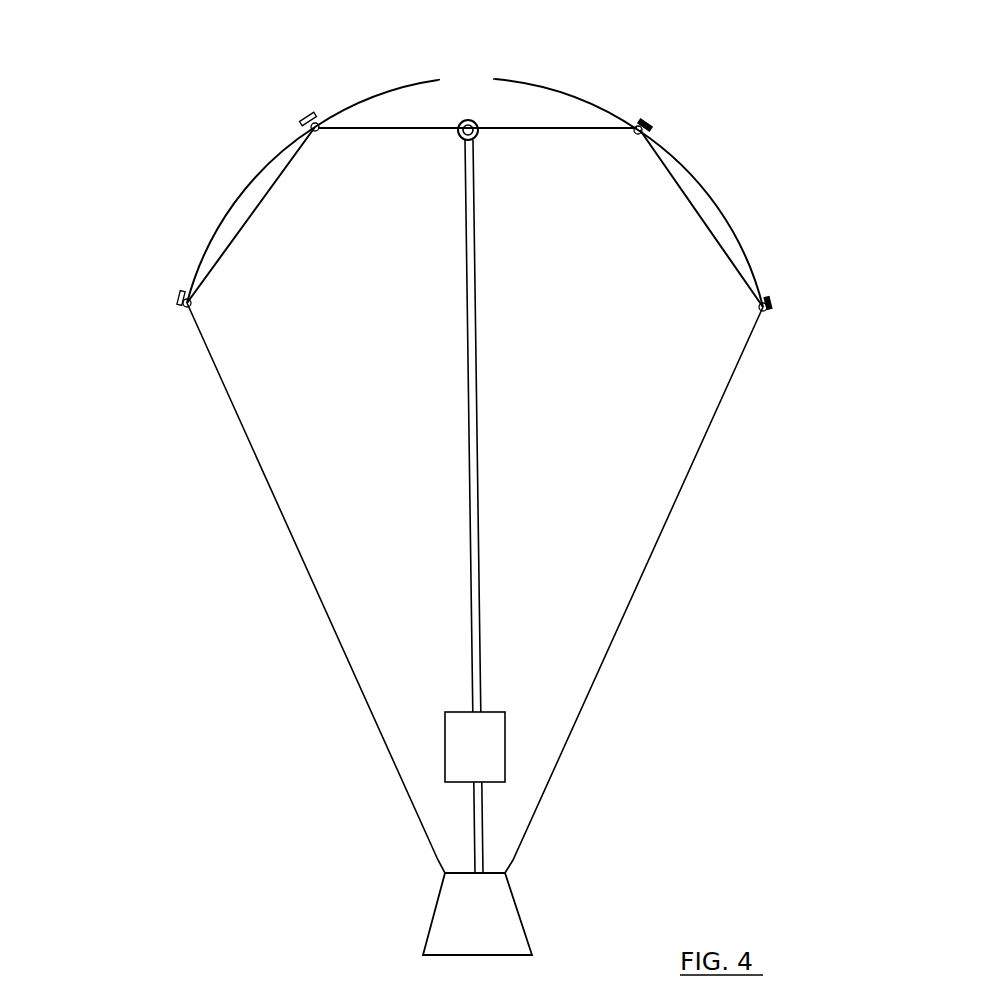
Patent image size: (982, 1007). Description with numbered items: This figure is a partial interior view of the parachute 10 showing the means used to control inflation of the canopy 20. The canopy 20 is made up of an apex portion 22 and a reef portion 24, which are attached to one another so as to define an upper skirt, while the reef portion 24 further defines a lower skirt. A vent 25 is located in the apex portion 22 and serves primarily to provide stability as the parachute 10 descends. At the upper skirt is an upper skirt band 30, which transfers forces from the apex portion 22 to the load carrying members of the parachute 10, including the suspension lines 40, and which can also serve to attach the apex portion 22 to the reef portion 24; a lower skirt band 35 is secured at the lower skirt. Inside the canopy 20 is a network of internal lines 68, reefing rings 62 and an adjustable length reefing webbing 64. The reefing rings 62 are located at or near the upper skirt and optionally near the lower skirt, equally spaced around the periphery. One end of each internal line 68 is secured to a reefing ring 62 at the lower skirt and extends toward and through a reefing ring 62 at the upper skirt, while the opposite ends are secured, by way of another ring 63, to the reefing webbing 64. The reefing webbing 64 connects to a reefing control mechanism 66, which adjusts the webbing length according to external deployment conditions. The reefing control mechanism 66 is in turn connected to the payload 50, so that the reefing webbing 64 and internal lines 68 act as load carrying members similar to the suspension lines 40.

The parachute 10 is at (168, 163).
The canopy 20 is at (300, 112).
The apex portion 22 is at (387, 87).
The reef portion 24 is at (200, 253).
The vent 25 is at (467, 78).
The upper skirt band 30 is at (641, 124).
The lower skirt band 35 is at (773, 302).
The suspension lines 40 is at (660, 538).
The payload 50 is at (450, 913).
The reefing rings 62 is at (637, 134).
The ring 63 is at (478, 133).
The adjustable length reefing webbing 64 is at (470, 680).
The reefing control mechanism 66 is at (495, 732).
The internal lines 68 is at (282, 175).